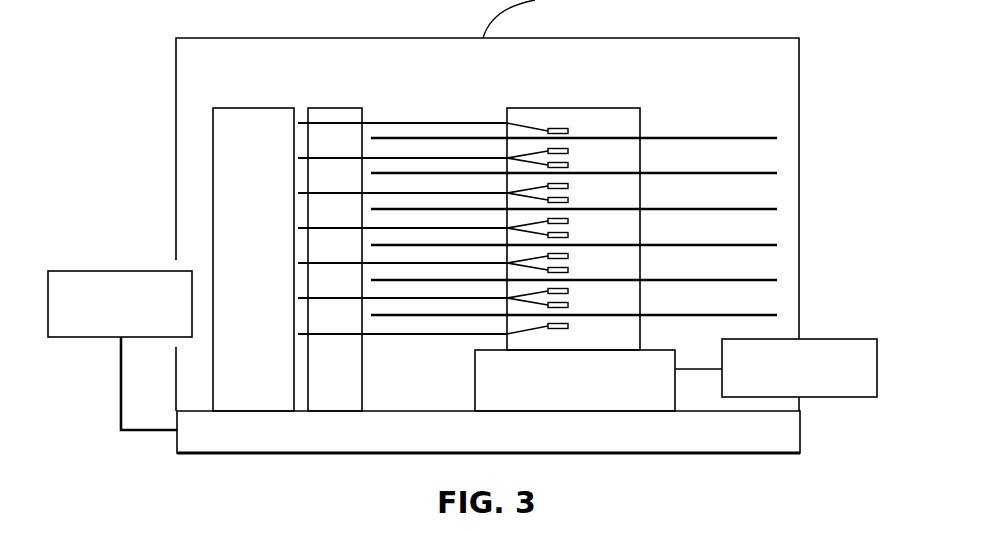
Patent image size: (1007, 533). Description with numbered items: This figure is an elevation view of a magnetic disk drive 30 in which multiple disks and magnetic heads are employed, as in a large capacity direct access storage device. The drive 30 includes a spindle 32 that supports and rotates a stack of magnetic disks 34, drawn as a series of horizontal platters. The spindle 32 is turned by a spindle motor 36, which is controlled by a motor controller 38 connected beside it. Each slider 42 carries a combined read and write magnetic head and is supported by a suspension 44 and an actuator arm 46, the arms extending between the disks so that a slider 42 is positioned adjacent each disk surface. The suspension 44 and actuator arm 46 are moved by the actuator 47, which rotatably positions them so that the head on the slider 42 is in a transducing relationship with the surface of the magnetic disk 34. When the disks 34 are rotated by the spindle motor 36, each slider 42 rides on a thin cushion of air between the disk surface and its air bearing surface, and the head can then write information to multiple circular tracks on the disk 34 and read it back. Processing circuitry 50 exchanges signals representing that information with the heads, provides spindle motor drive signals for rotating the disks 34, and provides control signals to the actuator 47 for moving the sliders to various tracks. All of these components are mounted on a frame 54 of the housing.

The magnetic disk drive 30 is at (688, 112).
The spindle 32 is at (627, 108).
The magnetic disk 34 is at (768, 138).
The spindle motor 36 is at (565, 391).
The motor controller 38 is at (837, 398).
The slider 42 is at (570, 148).
The suspension 44 is at (537, 157).
The actuator arm 46 is at (477, 157).
The actuator 47 is at (243, 108).
The processing circuitry 50 is at (90, 271).
The frame 54 is at (232, 454).